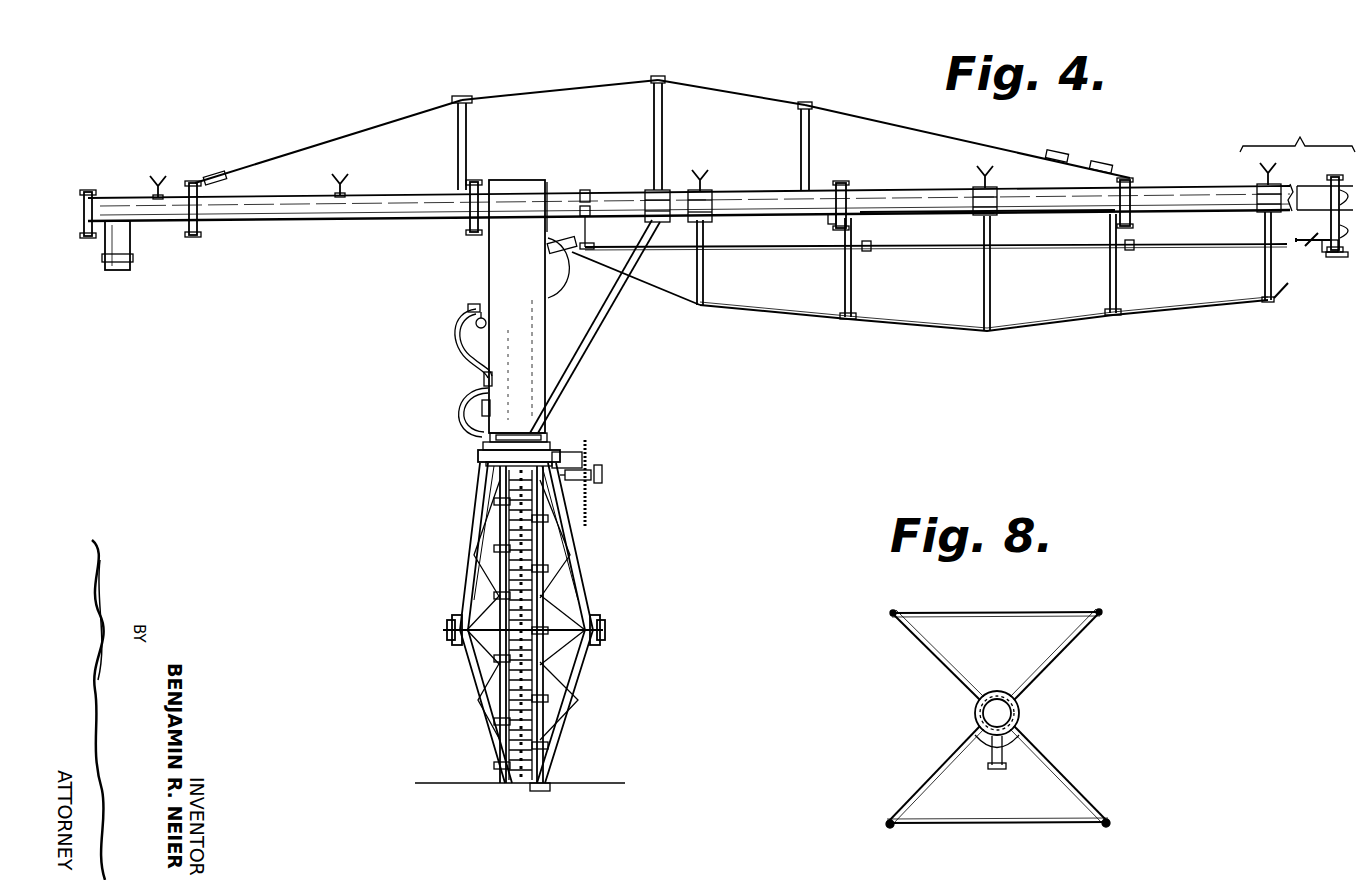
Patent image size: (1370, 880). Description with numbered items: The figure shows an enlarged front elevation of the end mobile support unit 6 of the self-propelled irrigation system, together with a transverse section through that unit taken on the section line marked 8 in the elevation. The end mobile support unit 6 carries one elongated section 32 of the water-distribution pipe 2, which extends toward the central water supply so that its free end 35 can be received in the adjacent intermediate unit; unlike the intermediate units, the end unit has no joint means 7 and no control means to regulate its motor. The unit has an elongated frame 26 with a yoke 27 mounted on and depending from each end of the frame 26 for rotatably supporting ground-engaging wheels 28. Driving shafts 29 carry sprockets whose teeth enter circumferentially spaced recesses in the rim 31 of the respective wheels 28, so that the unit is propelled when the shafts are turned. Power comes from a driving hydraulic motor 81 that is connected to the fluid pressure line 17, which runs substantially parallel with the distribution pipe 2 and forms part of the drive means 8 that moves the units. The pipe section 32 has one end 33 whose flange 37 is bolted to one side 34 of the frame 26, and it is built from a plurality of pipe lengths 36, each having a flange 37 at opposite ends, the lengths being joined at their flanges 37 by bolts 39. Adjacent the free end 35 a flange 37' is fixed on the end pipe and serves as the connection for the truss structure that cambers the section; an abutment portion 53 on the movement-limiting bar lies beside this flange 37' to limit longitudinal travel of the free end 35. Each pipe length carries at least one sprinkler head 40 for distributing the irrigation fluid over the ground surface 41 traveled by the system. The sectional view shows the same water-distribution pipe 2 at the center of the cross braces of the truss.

In FIG. 4, the water-distribution pipe 2 is at (404, 196).
In FIG. 8, the water-distribution pipe 2 is at (995, 702).
In FIG. 4, the end mobile support unit 6 is at (549, 180).
In FIG. 4, the joint means 7 is at (510, 182).
In FIG. 4, the drive means 8 is at (740, 58).
In FIG. 4, the fluid pressure line 17 is at (940, 255).
In FIG. 4, the frame 26 is at (518, 432).
In FIG. 4, the yoke 27 is at (458, 582).
In FIG. 4, the wheels 28 is at (498, 752).
In FIG. 4, the driving shafts 29 is at (480, 462).
In FIG. 4, the rim 31 is at (530, 658).
In FIG. 4, the elongated section 32 is at (1070, 218).
In FIG. 4, the one end 33 is at (645, 210).
In FIG. 4, the one side 34 is at (586, 192).
In FIG. 4, the free end 35 is at (1310, 218).
In FIG. 4, the pipe lengths 36 is at (824, 188).
In FIG. 4, the flange 37 is at (662, 135).
In FIG. 4, the flange 37' is at (1297, 155).
In FIG. 4, the bolts 39 is at (836, 222).
In FIG. 4, the sprinkler head 40 is at (162, 180).
In FIG. 4, the ground surface 41 is at (580, 783).
In FIG. 4, the abutment portion 53 is at (1322, 258).
In FIG. 4, the driving hydraulic motor 81 is at (578, 478).